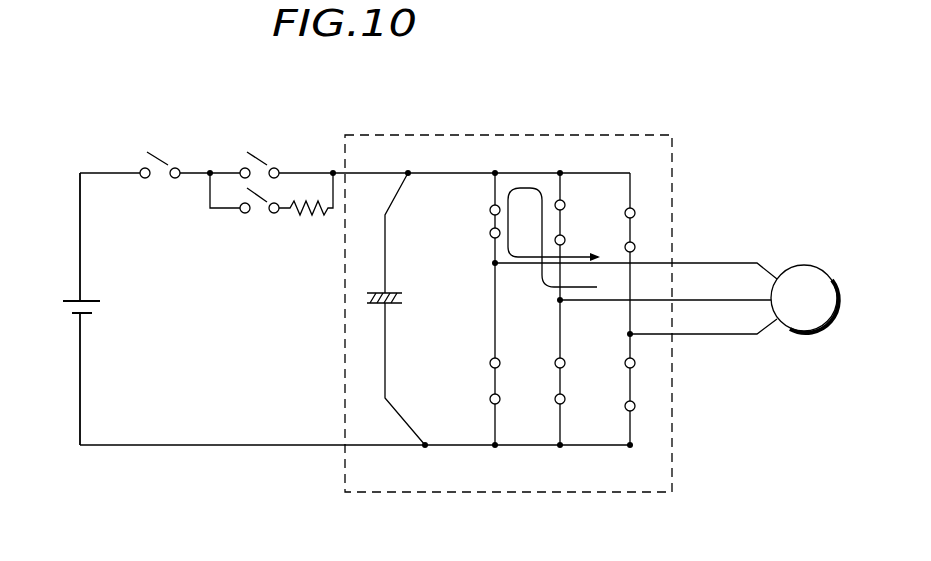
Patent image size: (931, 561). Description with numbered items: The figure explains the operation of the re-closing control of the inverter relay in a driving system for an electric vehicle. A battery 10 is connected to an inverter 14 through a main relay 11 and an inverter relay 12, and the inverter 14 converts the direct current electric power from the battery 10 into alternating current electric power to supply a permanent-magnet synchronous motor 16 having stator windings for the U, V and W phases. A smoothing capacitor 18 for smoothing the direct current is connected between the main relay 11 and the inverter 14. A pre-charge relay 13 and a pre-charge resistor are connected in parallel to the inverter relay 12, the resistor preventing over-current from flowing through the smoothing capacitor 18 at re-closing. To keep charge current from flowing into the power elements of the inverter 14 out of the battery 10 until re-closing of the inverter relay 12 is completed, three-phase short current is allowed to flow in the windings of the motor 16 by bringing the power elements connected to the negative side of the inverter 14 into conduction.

The battery 10 is at (70, 295).
The main relay 11 is at (175, 129).
The inverter relay 12 is at (268, 163).
The pre-charge relay 13 is at (262, 268).
The inverter 14 is at (637, 148).
The synchronous motor 16 is at (800, 263).
The smoothing capacitor 18 is at (375, 308).